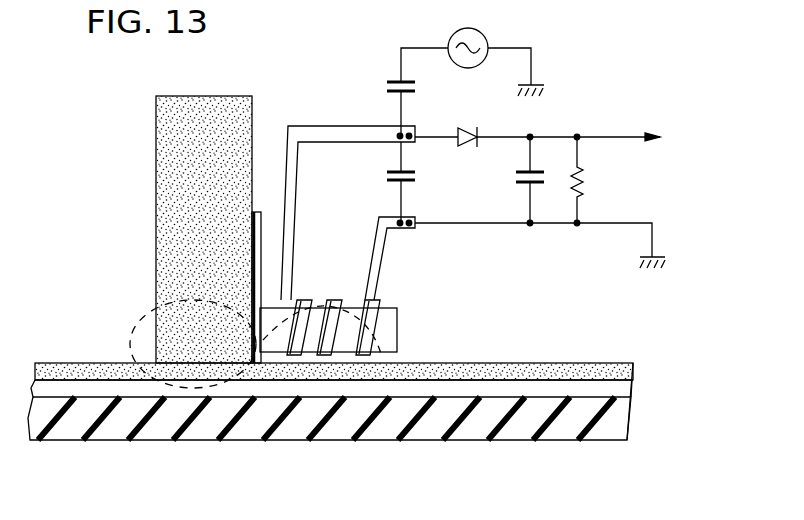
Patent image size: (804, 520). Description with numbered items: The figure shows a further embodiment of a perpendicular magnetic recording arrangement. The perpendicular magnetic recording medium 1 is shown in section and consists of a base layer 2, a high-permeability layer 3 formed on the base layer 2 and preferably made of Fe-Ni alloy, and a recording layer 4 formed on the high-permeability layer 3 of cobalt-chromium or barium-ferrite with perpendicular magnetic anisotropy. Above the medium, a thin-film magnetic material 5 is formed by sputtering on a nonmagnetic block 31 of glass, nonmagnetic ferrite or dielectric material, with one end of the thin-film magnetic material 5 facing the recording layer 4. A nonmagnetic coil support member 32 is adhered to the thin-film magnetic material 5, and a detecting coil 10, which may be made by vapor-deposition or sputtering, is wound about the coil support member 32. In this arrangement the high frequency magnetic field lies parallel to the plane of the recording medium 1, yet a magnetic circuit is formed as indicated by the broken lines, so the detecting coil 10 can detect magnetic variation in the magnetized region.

The perpendicular magnetic recording medium 1 is at (632, 402).
The base layer 2 is at (618, 425).
The high-permeability layer 3 is at (625, 388).
The recording layer 4 is at (575, 363).
The thin-film magnetic material 5 is at (257, 212).
The detecting coil 10 is at (382, 258).
The nonmagnetic block 31 is at (202, 96).
The nonmagnetic coil support member 32 is at (399, 325).